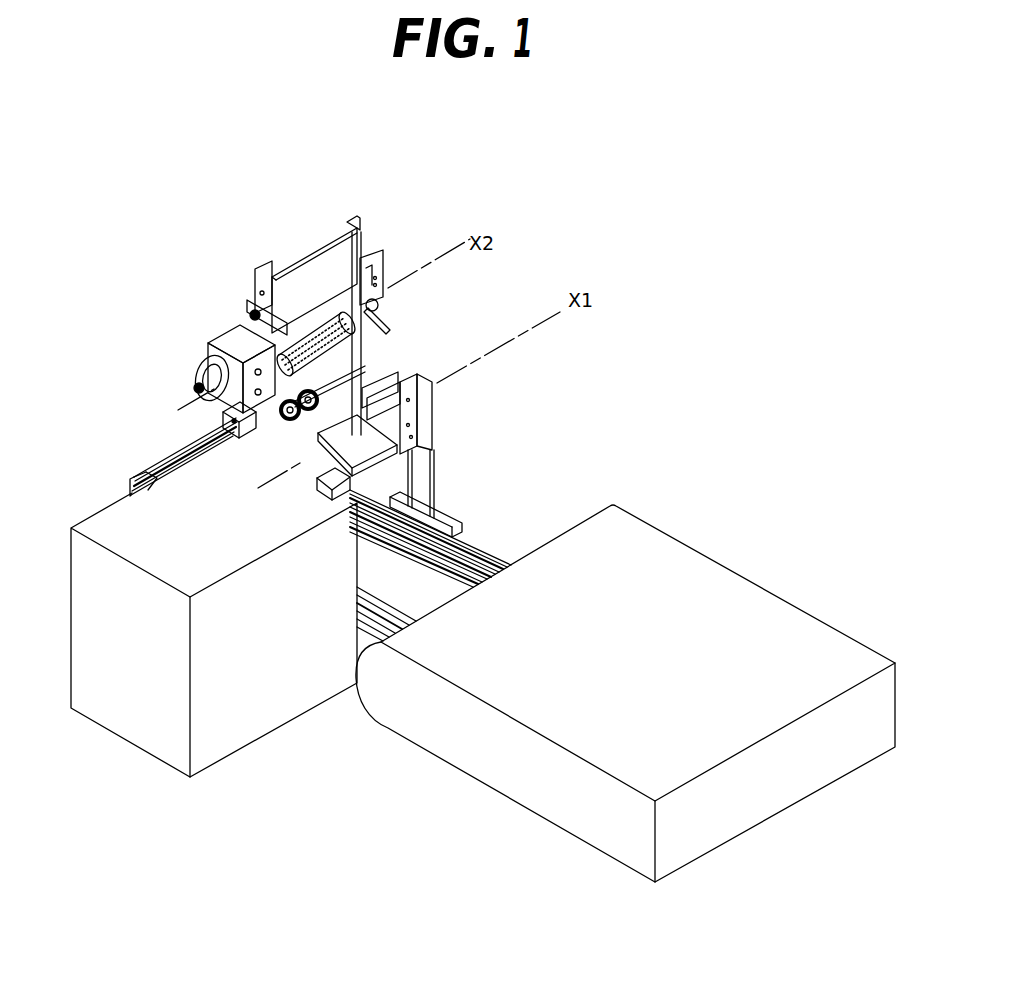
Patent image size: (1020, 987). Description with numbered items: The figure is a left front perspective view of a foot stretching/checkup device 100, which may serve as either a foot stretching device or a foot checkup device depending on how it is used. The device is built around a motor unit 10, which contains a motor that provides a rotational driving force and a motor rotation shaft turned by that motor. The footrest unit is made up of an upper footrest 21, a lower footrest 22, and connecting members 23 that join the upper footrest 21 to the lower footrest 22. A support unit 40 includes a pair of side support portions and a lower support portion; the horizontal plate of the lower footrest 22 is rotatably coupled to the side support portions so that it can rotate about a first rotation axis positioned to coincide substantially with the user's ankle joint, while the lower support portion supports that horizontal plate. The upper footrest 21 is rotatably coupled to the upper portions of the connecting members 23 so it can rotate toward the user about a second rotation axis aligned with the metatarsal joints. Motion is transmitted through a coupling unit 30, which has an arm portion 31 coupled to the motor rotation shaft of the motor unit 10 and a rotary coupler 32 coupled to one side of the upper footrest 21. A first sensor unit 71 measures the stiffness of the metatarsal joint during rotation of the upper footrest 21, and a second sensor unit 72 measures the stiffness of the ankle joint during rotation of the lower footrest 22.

The foot stretching/checkup device 100 is at (582, 192).
The motor unit 10 is at (132, 505).
The upper footrest 21 is at (312, 262).
The lower footrest 22 is at (373, 462).
The connecting members 23 is at (350, 345).
The coupling unit 30 is at (163, 355).
The arm portion 31 is at (197, 390).
The rotary coupler 32 is at (203, 337).
The support unit 40 is at (428, 408).
The first sensor unit 71 is at (225, 337).
The second sensor unit 72 is at (367, 487).